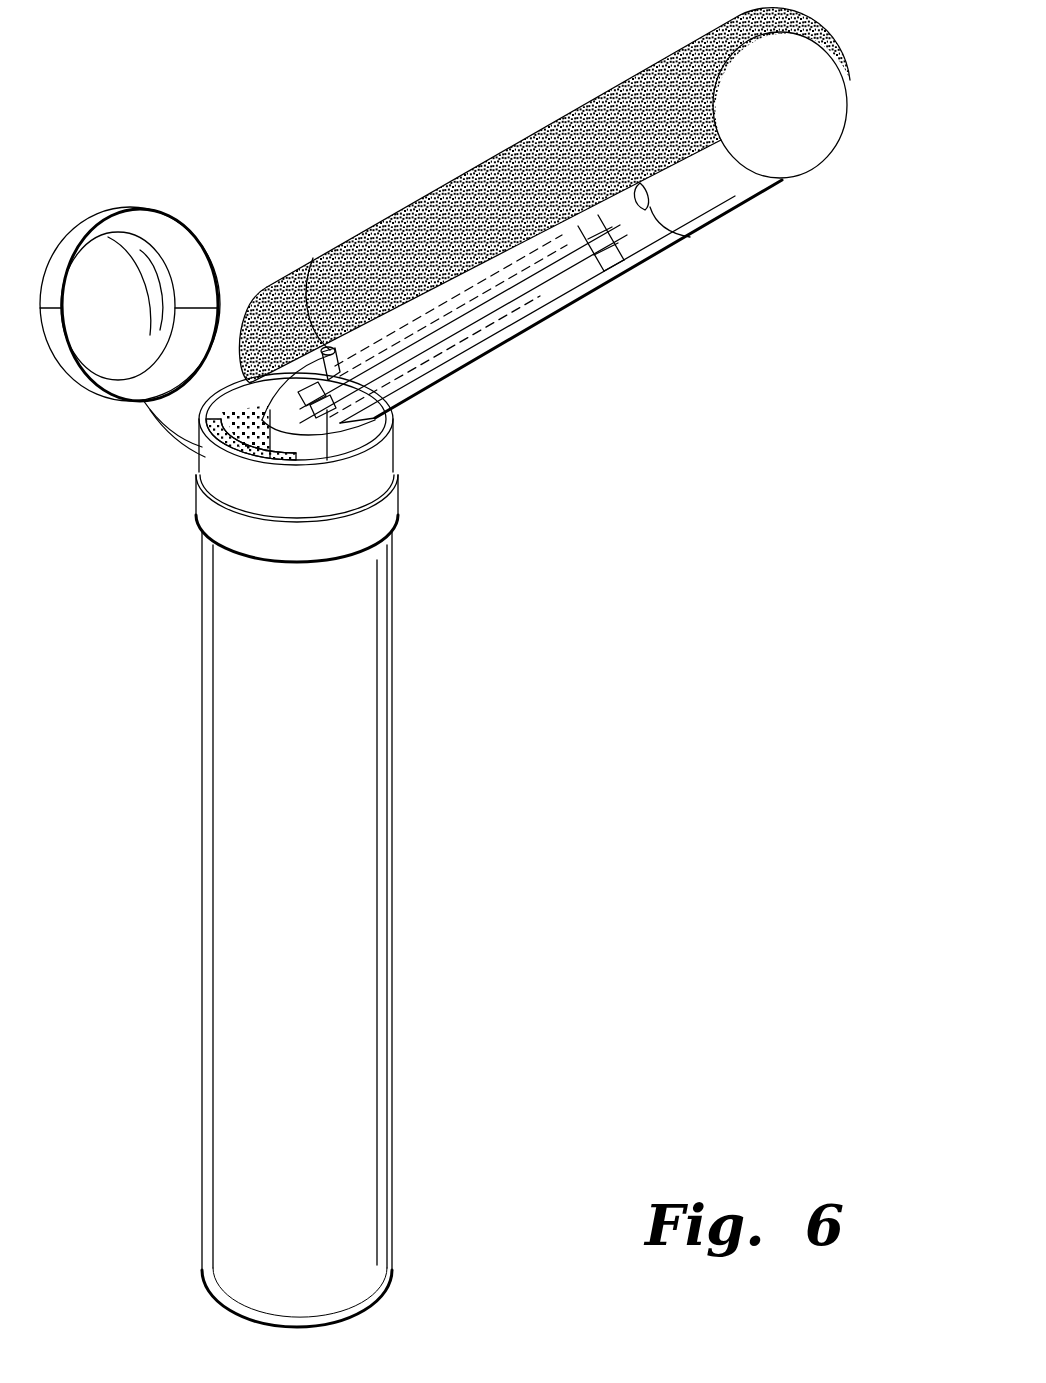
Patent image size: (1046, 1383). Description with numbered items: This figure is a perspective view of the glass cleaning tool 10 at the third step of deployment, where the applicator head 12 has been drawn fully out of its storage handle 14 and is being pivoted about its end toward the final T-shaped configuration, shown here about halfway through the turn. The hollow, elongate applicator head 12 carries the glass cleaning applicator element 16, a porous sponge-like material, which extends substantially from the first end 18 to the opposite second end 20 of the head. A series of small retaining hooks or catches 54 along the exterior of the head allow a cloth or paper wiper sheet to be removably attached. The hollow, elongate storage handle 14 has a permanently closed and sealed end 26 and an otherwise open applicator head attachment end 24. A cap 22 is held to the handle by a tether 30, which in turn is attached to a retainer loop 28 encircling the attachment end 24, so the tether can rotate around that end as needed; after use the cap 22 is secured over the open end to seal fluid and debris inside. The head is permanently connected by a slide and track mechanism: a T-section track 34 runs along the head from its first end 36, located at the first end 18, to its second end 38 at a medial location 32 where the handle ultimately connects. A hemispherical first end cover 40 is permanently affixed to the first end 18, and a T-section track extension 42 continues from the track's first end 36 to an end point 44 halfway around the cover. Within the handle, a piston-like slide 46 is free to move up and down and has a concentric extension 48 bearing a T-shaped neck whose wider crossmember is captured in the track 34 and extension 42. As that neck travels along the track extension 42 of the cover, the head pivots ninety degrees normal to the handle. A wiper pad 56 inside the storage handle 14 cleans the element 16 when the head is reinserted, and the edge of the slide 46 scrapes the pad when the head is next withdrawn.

The glass cleaning tool 10 is at (703, 693).
The applicator head 12 is at (698, 203).
The applicator head storage handle 14 is at (301, 917).
The glass cleaning applicator element 16 is at (497, 152).
The first end 18 is at (277, 283).
The second end 20 is at (787, 183).
The cap 22 is at (132, 208).
The applicator head attachment end 24 is at (413, 420).
The closed and sealed end 26 is at (375, 1305).
The retainer loop 28 is at (193, 493).
The tether 30 is at (168, 432).
The medial location 32 is at (608, 272).
The T-section track 34 is at (470, 326).
The first end of track 36 is at (383, 428).
The second end of track 38 is at (598, 288).
The first end cover 40 is at (300, 412).
The T-section track extension 42 is at (330, 445).
The end point of track extension 44 is at (448, 326).
The slide 46 is at (200, 463).
The concentric extension 48 is at (307, 447).
The retaining hooks or catches 54 is at (313, 258).
The wiper pad 56 is at (263, 457).